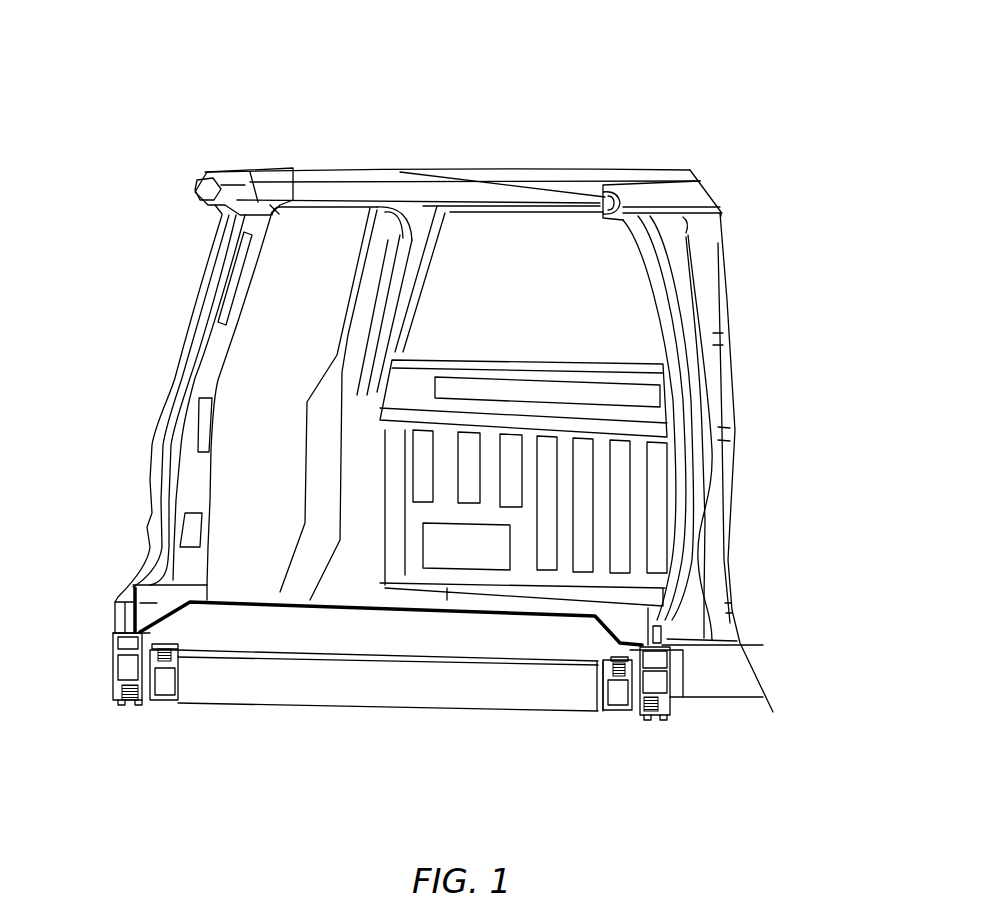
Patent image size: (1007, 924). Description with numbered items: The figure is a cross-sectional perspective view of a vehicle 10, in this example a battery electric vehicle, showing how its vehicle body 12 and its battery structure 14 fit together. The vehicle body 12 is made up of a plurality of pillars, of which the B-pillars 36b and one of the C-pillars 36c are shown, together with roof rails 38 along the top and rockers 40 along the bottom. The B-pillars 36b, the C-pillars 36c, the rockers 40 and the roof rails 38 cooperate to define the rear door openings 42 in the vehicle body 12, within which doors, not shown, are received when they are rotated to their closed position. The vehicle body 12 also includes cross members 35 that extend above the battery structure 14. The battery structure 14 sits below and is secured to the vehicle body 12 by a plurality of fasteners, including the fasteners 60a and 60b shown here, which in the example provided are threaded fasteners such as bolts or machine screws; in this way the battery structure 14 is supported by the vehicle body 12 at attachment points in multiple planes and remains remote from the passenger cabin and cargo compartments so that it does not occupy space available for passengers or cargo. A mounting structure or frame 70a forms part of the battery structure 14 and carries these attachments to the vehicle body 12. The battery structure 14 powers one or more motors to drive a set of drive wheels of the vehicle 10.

The vehicle 10 is at (763, 112).
The vehicle body 12 is at (703, 223).
The battery structure 14 is at (635, 750).
The cross members 35 is at (390, 600).
The B-pillars 36b is at (197, 388).
The C-pillars 36c is at (403, 243).
The roof rails 38 is at (197, 170).
The rockers 40 is at (112, 670).
The rear door openings 42 is at (267, 320).
The fastener 60a is at (130, 703).
The fastener 60b is at (163, 646).
The mounting structure or frame 70a is at (197, 688).